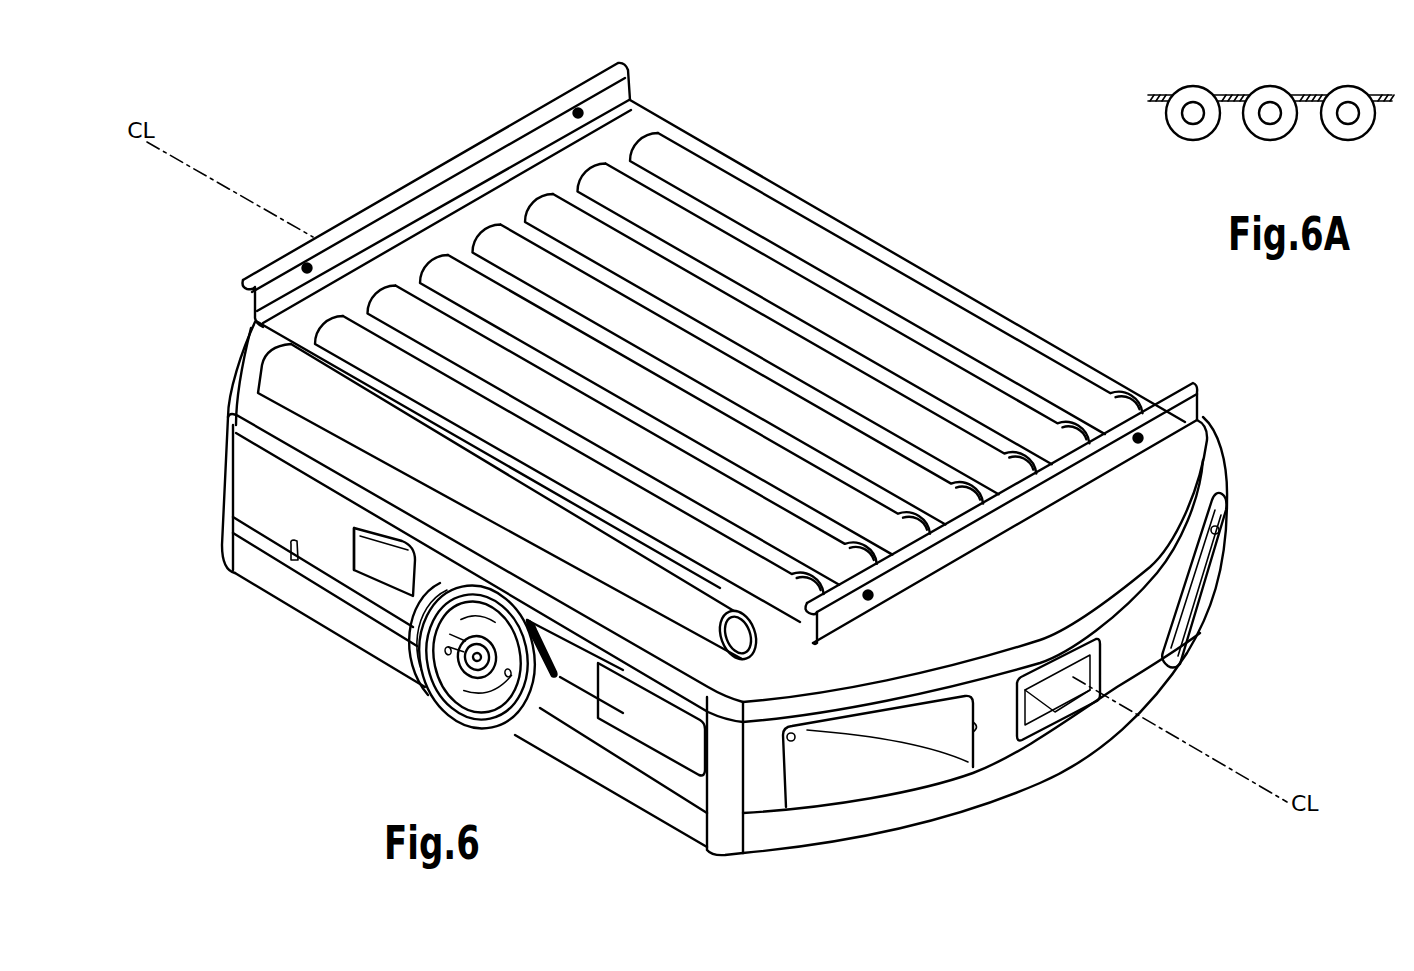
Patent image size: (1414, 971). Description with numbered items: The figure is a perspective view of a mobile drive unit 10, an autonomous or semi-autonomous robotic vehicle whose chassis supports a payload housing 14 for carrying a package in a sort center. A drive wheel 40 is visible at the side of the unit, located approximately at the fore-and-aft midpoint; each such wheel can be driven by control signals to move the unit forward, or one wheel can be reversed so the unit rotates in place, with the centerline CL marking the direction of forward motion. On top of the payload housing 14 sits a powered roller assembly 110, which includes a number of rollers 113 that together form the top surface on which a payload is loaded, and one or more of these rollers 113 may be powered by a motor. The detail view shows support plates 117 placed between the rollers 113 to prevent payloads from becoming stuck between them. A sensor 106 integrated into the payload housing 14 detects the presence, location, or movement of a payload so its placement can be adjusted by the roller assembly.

In FIG. 6, the mobile drive unit 10 is at (624, 797).
In FIG. 6, the payload housing 14 is at (1200, 414).
In FIG. 6, the drive wheel 40 is at (470, 707).
In FIG. 6, the sensor 106 is at (346, 286).
In FIG. 6, the powered roller assembly 110 is at (1061, 344).
In FIG. 6A, the roller 113 is at (1333, 130).
In FIG. 6A, the support plate 117 is at (1303, 97).